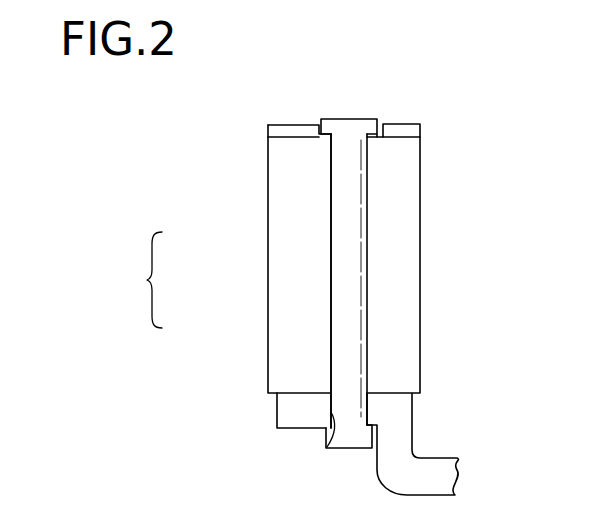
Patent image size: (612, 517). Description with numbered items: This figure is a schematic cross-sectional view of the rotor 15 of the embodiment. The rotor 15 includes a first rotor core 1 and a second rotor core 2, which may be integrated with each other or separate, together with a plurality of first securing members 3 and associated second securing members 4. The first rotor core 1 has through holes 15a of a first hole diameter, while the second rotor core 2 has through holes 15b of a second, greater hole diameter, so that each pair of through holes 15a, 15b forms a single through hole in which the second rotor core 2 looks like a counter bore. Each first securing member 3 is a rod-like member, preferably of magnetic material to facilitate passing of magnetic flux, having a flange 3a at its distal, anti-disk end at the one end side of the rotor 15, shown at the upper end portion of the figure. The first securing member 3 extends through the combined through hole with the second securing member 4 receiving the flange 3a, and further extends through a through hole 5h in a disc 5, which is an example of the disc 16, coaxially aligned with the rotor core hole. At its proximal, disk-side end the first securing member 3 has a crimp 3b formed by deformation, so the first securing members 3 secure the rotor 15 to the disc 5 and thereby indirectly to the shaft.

The first rotor core 1 is at (402, 253).
The second rotor core 2 is at (440, 101).
The first securing member 3 is at (380, 286).
The flange 3a is at (345, 127).
The crimp 3b is at (347, 437).
The second securing member 4 is at (392, 120).
The disc 5 is at (251, 447).
The through hole 5h is at (305, 411).
The rotor 15 is at (190, 257).
The through hole 15a is at (337, 305).
The through hole 15b is at (318, 134).
The disc 16 is at (301, 410).